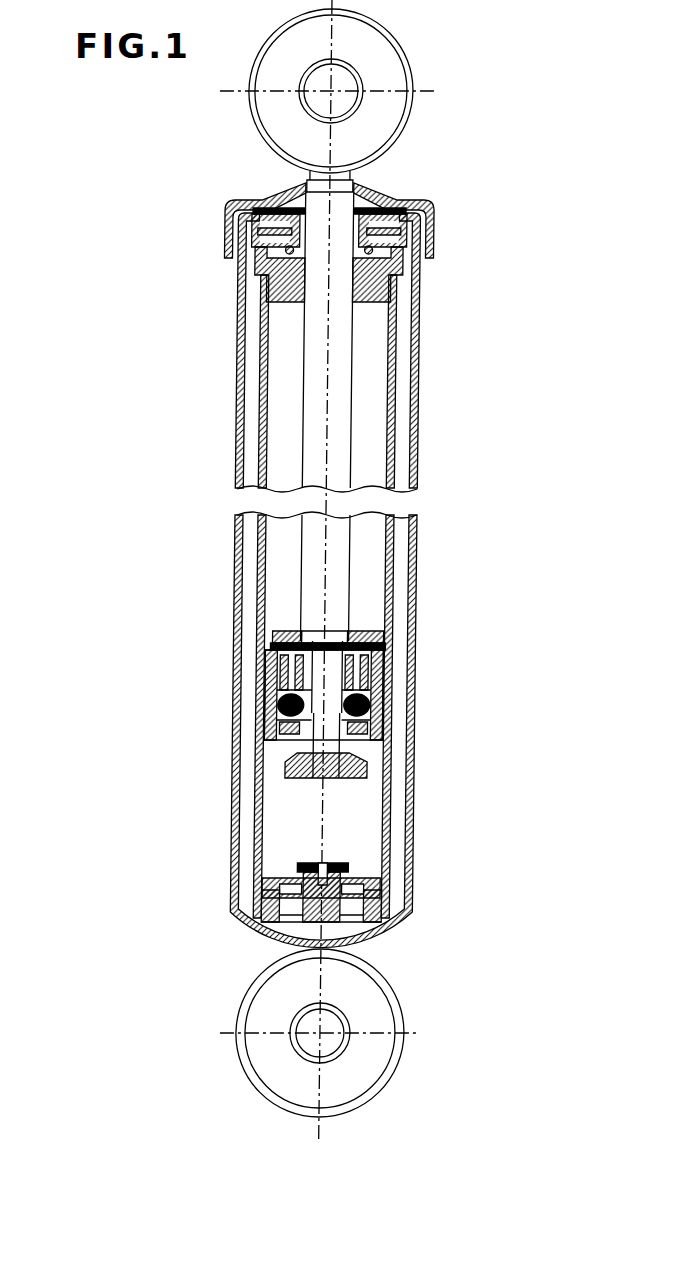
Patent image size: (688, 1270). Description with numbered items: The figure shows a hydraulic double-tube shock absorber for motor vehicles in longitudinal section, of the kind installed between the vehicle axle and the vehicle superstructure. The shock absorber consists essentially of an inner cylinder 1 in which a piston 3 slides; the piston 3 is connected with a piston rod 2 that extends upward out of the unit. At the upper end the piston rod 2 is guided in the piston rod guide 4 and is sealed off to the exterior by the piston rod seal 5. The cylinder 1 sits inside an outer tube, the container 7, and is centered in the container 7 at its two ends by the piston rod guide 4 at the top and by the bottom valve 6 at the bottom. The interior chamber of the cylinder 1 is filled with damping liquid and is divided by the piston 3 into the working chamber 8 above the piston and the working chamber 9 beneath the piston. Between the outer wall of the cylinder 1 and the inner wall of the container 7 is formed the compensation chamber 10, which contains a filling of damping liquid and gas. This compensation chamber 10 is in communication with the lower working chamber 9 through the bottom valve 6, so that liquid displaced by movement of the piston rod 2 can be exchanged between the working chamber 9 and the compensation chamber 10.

The cylinder 1 is at (397, 568).
The piston rod 2 is at (347, 462).
The piston 3 is at (400, 705).
The piston rod guide 4 is at (380, 288).
The piston rod seal 5 is at (435, 223).
The bottom valve 6 is at (397, 902).
The container 7 is at (420, 398).
The working chamber 8 is at (379, 533).
The working chamber 9 is at (299, 803).
The compensation chamber 10 is at (410, 651).